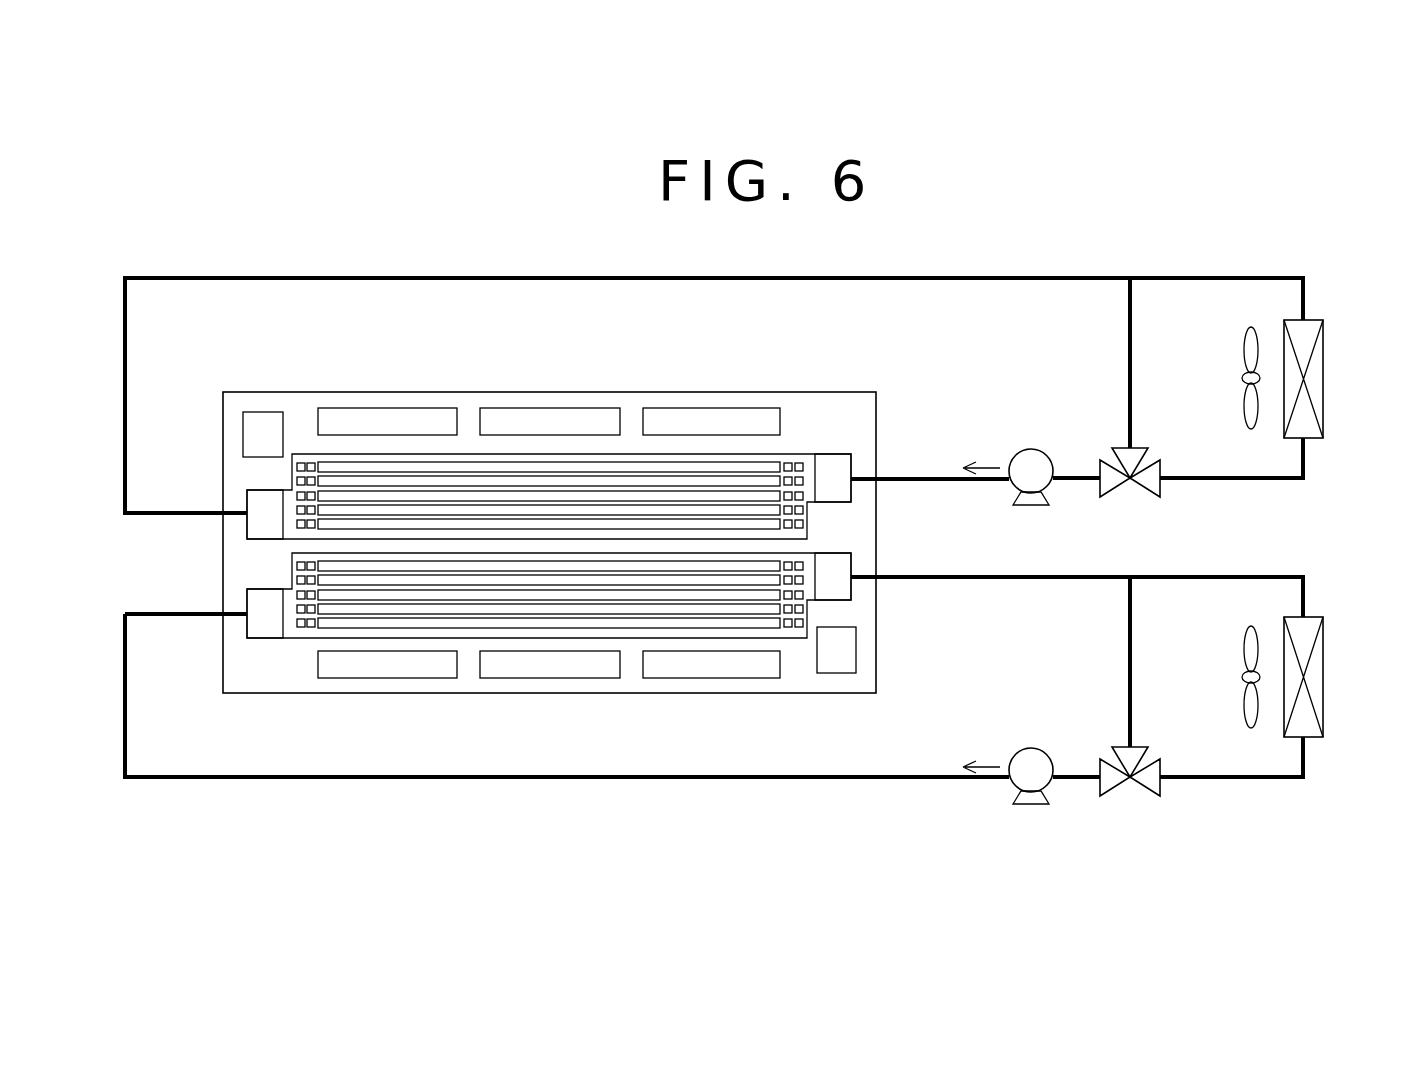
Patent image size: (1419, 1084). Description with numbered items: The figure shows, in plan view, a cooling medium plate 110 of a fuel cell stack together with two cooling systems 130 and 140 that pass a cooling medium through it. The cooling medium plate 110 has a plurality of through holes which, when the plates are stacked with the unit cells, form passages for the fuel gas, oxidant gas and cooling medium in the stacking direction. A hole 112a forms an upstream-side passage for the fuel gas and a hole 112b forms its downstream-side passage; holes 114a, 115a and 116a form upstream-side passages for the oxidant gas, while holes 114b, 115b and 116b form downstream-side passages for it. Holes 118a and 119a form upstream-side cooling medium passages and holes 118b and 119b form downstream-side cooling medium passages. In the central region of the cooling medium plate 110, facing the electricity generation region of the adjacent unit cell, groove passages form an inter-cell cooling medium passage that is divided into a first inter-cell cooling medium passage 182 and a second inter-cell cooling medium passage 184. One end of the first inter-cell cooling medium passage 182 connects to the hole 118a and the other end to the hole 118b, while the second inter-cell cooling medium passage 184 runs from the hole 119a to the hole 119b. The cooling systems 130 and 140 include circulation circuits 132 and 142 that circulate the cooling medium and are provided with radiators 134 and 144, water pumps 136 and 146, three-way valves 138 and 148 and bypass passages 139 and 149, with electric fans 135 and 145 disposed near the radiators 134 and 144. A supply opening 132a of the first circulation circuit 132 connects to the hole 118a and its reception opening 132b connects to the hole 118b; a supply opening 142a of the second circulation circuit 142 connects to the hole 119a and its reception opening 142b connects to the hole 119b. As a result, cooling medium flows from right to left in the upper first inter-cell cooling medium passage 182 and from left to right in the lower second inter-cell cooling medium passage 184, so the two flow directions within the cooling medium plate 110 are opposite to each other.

The cooling medium plate 110 is at (795, 353).
The hole 112a is at (840, 660).
The hole 112b is at (262, 424).
The hole 114a is at (392, 412).
The hole 114b is at (393, 665).
The hole 115a is at (557, 412).
The hole 115b is at (556, 665).
The hole 116a is at (716, 412).
The hole 116b is at (716, 665).
The hole 118a is at (833, 467).
The hole 118b is at (258, 523).
The hole 119a is at (258, 605).
The hole 119b is at (833, 565).
The cooling system 130 is at (768, 346).
The circulation circuit 132 is at (1018, 276).
The supply opening 132a is at (852, 474).
The reception opening 132b is at (247, 512).
The radiator 134 is at (1325, 372).
The electric fan 135 is at (1244, 350).
The water pump 136 is at (1031, 448).
The three-way valve 138 is at (1162, 468).
The bypass passage 139 is at (1128, 328).
The cooling system 140 is at (768, 649).
The circulation circuit 142 is at (1048, 577).
The supply opening 142a is at (247, 615).
The reception opening 142b is at (852, 574).
The radiator 144 is at (1325, 672).
The electric fan 145 is at (1244, 648).
The water pump 146 is at (1031, 747).
The three-way valve 148 is at (1162, 767).
The bypass passage 149 is at (1128, 632).
The first inter-cell cooling medium passage 182 is at (547, 433).
The second inter-cell cooling medium passage 184 is at (546, 680).